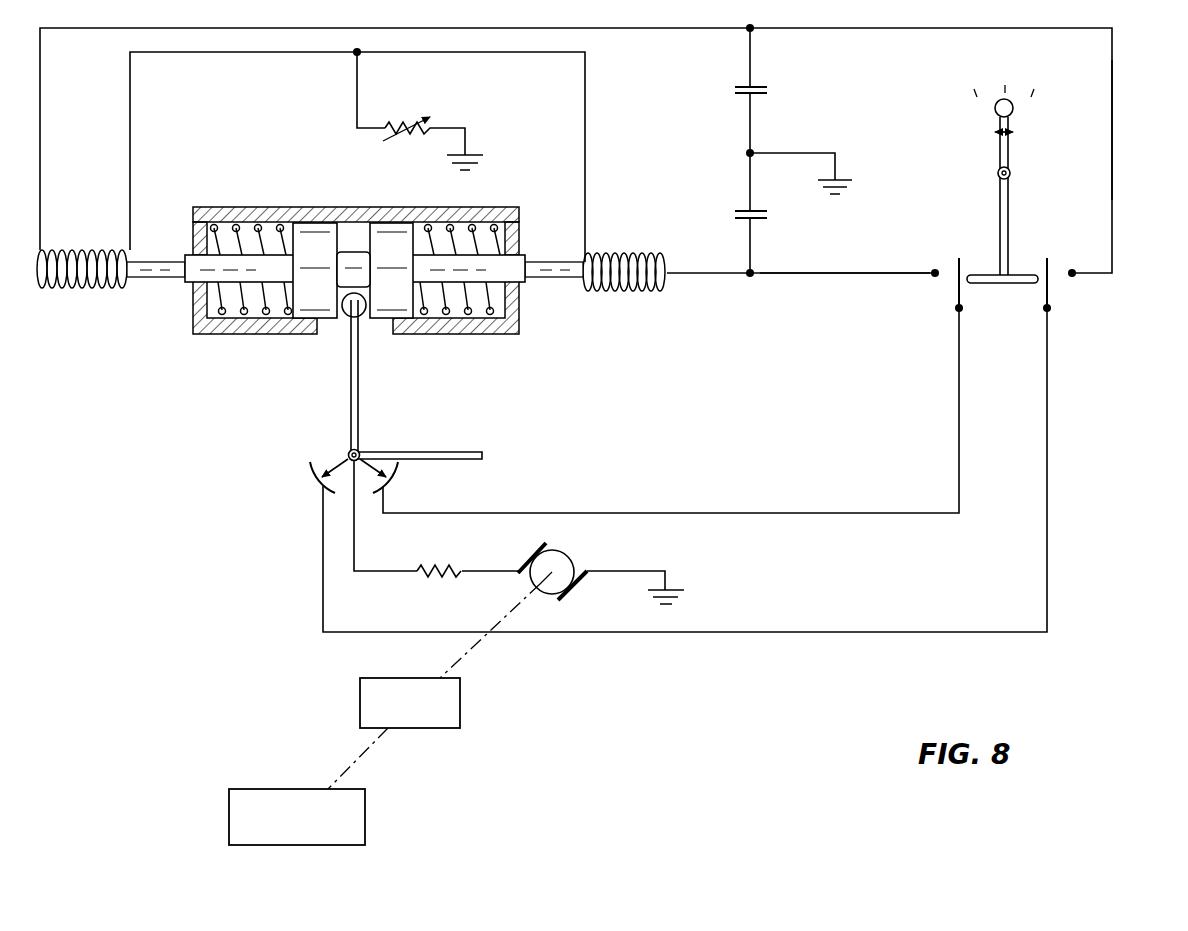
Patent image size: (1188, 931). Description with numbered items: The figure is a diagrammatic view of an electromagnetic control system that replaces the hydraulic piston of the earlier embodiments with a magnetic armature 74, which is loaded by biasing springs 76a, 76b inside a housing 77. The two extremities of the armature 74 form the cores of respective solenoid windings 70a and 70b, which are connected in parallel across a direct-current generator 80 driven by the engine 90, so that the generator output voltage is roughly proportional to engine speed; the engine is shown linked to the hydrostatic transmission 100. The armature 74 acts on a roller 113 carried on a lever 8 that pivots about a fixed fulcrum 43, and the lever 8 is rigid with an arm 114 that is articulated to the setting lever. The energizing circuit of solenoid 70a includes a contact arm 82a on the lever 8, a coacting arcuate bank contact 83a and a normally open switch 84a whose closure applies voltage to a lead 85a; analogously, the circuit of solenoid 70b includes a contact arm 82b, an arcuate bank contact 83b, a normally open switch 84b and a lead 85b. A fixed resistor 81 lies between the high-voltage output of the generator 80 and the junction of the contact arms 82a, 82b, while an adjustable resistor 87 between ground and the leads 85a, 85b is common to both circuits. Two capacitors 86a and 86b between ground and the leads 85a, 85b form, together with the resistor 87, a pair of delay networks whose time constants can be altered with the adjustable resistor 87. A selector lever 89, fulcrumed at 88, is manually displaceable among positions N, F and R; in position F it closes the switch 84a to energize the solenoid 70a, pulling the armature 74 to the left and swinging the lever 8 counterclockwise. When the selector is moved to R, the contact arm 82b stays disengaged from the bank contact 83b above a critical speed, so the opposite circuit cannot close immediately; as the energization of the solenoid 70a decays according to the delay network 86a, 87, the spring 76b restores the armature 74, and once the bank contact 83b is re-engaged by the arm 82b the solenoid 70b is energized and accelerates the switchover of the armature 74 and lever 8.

The lever 8 is at (350, 378).
The fixed fulcrum 43 is at (344, 449).
The solenoid winding 70a is at (82, 290).
The solenoid winding 70b is at (622, 292).
The magnetic armature 74 is at (248, 262).
The biasing spring 76a is at (478, 305).
The biasing spring 76b is at (236, 305).
The housing 77 is at (327, 207).
The direct-current generator 80 is at (575, 556).
The fixed resistor 81 is at (440, 565).
The contact arm 82a is at (340, 460).
The contact arm 82b is at (384, 456).
The arcuate bank contact 83a is at (312, 470).
The arcuate bank contact 83b is at (388, 478).
The normally open switch 84a is at (1048, 288).
The normally open switch 84b is at (958, 288).
The lead 85a is at (1112, 128).
The lead 85b is at (813, 276).
The capacitor 86a is at (735, 90).
The capacitor 86b is at (735, 214).
The adjustable resistor 87 is at (406, 126).
The fulcrum 88 is at (998, 173).
The selector lever 89 is at (1010, 148).
The engine 90 is at (460, 700).
The hydrostatic transmission 100 is at (365, 812).
The roller 113 is at (366, 316).
The arm 114 is at (480, 452).